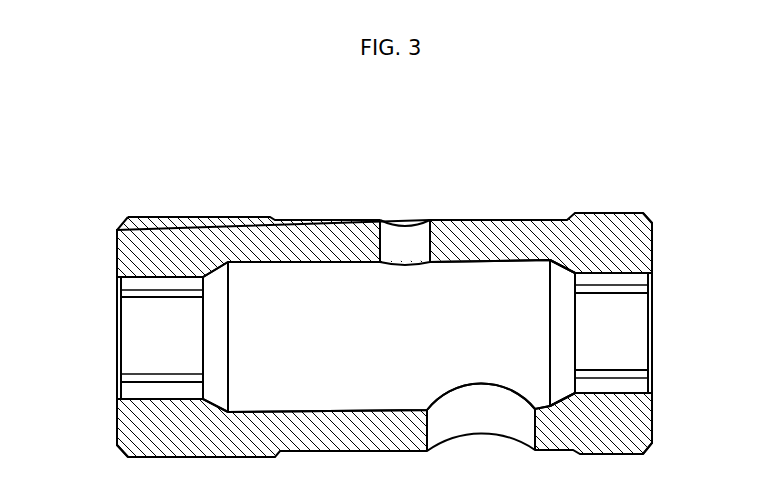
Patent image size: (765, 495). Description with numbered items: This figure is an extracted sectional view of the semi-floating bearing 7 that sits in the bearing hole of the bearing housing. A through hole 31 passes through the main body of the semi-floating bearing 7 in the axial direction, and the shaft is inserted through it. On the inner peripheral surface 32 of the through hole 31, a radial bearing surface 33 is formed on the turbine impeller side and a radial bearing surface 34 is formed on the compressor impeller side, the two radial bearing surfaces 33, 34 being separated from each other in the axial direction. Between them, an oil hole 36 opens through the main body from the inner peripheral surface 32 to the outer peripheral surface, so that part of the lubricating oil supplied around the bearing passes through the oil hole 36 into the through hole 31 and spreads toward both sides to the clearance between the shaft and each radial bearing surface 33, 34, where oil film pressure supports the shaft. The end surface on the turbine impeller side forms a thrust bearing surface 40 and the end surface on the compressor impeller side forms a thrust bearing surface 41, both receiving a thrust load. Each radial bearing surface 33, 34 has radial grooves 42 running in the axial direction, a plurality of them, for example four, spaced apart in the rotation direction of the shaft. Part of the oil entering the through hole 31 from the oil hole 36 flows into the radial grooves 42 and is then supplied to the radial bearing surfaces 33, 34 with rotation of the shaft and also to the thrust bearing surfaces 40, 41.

The semi-floating bearing 7 is at (240, 217).
The through hole 31 is at (500, 260).
The inner peripheral surface 32 is at (523, 262).
The radial bearing surface 33 is at (170, 279).
The radial bearing surface 34 is at (608, 273).
The oil hole 36 is at (420, 222).
The thrust bearing surface 40 is at (117, 242).
The thrust bearing surface 41 is at (652, 237).
The radial grooves 42 is at (120, 290).